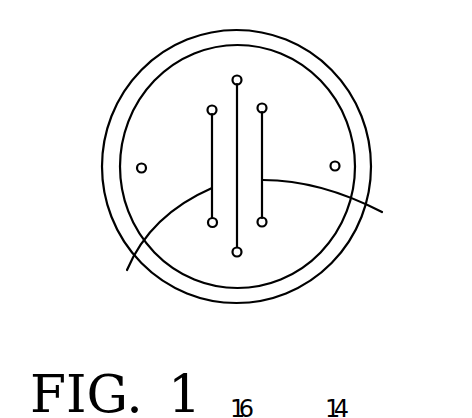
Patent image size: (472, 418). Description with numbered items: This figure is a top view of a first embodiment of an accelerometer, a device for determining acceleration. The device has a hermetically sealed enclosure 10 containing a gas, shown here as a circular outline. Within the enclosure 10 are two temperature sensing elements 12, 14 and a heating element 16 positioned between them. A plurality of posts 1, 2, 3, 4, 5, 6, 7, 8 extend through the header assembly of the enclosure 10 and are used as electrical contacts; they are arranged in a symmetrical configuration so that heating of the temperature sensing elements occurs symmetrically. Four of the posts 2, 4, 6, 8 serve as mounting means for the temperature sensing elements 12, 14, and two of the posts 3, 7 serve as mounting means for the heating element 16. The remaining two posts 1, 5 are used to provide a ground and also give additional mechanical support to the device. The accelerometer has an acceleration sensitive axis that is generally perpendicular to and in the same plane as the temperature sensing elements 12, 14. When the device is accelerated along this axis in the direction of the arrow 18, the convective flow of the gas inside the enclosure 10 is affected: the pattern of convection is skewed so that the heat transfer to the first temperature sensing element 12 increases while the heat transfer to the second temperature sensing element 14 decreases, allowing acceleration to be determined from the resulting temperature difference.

The ground post 1 is at (340, 166).
The post 2 is at (265, 225).
The post 3 is at (237, 256).
The post 4 is at (213, 227).
The ground post 5 is at (137, 167).
The post 6 is at (212, 105).
The post 7 is at (237, 75).
The post 8 is at (262, 103).
The enclosure 10 is at (323, 225).
The first temperature sensing element 12 is at (163, 247).
The second temperature sensing element 14 is at (339, 205).
The heating element 16 is at (236, 143).
The arrow 18 is at (72, 169).